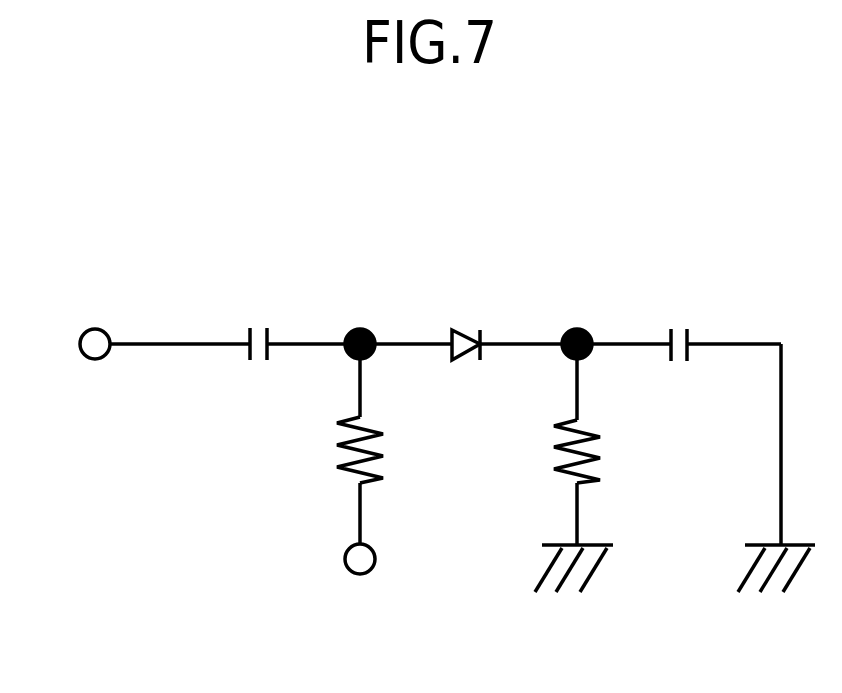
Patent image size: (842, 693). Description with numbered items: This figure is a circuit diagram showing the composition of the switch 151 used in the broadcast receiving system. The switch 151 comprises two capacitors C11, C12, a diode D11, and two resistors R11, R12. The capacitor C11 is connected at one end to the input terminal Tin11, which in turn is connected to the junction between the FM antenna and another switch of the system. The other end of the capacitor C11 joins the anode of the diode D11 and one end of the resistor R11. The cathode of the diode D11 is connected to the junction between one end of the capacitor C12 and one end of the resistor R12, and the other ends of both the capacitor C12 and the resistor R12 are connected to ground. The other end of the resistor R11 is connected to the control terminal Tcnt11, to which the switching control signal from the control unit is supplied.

The switch 151 is at (157, 204).
The input terminal Tin11 is at (94, 318).
The capacitor C11 is at (255, 319).
The diode D11 is at (461, 321).
The capacitor C12 is at (680, 321).
The resistor R11 is at (329, 444).
The resistor R12 is at (603, 468).
The control terminal Tcnt11 is at (358, 585).